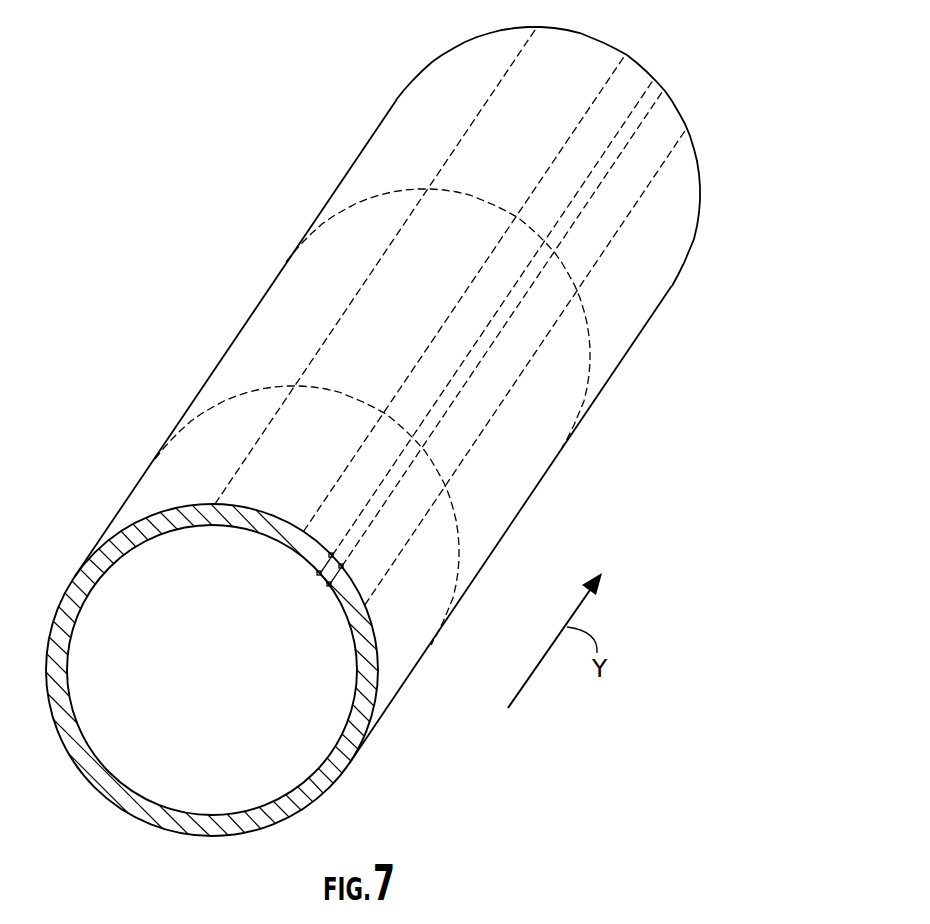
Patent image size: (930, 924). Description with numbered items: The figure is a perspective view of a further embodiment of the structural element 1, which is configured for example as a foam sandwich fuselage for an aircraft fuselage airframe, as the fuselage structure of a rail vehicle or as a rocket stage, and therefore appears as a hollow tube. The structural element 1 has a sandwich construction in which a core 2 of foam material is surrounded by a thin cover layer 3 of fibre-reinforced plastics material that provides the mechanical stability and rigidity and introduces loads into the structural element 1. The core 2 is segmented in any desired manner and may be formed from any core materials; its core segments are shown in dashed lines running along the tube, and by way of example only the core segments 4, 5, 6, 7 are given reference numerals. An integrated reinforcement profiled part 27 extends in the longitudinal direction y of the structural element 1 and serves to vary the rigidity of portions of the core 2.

The structural element 1 is at (150, 158).
The core 2 is at (232, 814).
The cover layer 3 is at (138, 763).
The core segment 4 is at (409, 652).
The core segment 5 is at (292, 312).
The core segment 6 is at (542, 448).
The core segment 7 is at (651, 95).
The reinforcement profiled part 27 is at (325, 576).